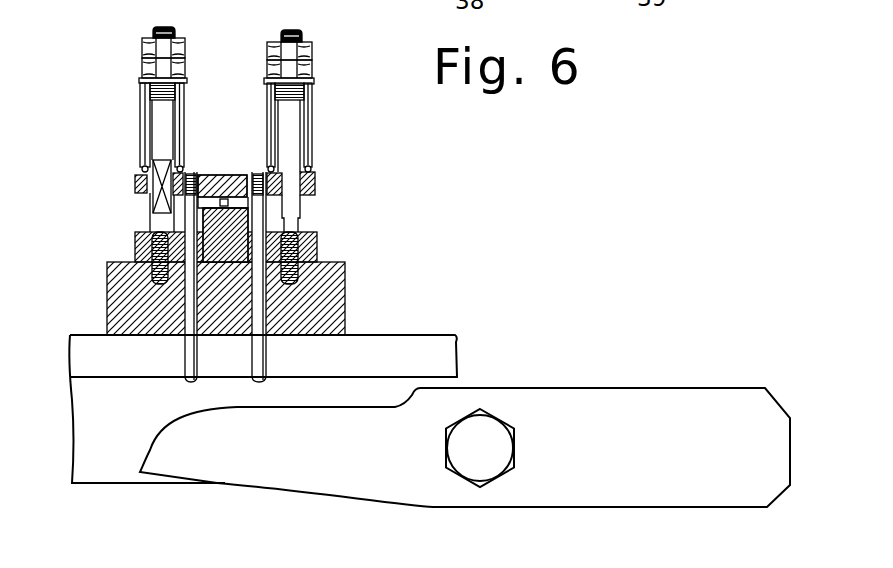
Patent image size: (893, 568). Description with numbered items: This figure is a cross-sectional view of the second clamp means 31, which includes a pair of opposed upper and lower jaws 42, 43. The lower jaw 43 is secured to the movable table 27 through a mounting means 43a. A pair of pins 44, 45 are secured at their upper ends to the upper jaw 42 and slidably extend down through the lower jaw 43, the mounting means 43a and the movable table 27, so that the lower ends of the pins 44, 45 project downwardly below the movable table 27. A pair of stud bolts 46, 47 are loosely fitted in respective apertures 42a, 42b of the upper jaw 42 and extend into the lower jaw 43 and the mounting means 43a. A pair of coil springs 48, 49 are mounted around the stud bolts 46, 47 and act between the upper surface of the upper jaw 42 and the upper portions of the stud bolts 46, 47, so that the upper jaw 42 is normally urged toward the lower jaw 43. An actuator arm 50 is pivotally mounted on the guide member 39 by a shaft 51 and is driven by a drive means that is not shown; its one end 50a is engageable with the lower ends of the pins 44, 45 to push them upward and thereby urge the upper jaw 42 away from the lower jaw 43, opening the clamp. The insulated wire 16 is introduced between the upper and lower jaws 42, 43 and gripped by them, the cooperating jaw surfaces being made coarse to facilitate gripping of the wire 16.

The insulated wire 16 is at (235, 176).
The movable table 27 is at (433, 344).
The second clamp means 31 is at (135, 207).
The guide member 39 is at (102, 470).
The upper jaw 42 is at (213, 176).
The aperture 42a is at (300, 200).
The aperture 42b is at (136, 184).
The lower jaw 43 is at (240, 215).
The mounting means 43a is at (345, 280).
The pin 44 is at (184, 358).
The pin 45 is at (267, 358).
The stud bolt 46 is at (173, 31).
The stud bolt 47 is at (300, 32).
The coil spring 48 is at (140, 100).
The coil spring 49 is at (312, 113).
The actuator arm 50 is at (672, 405).
The end of actuator arm 50a is at (180, 418).
The shaft 51 is at (505, 450).